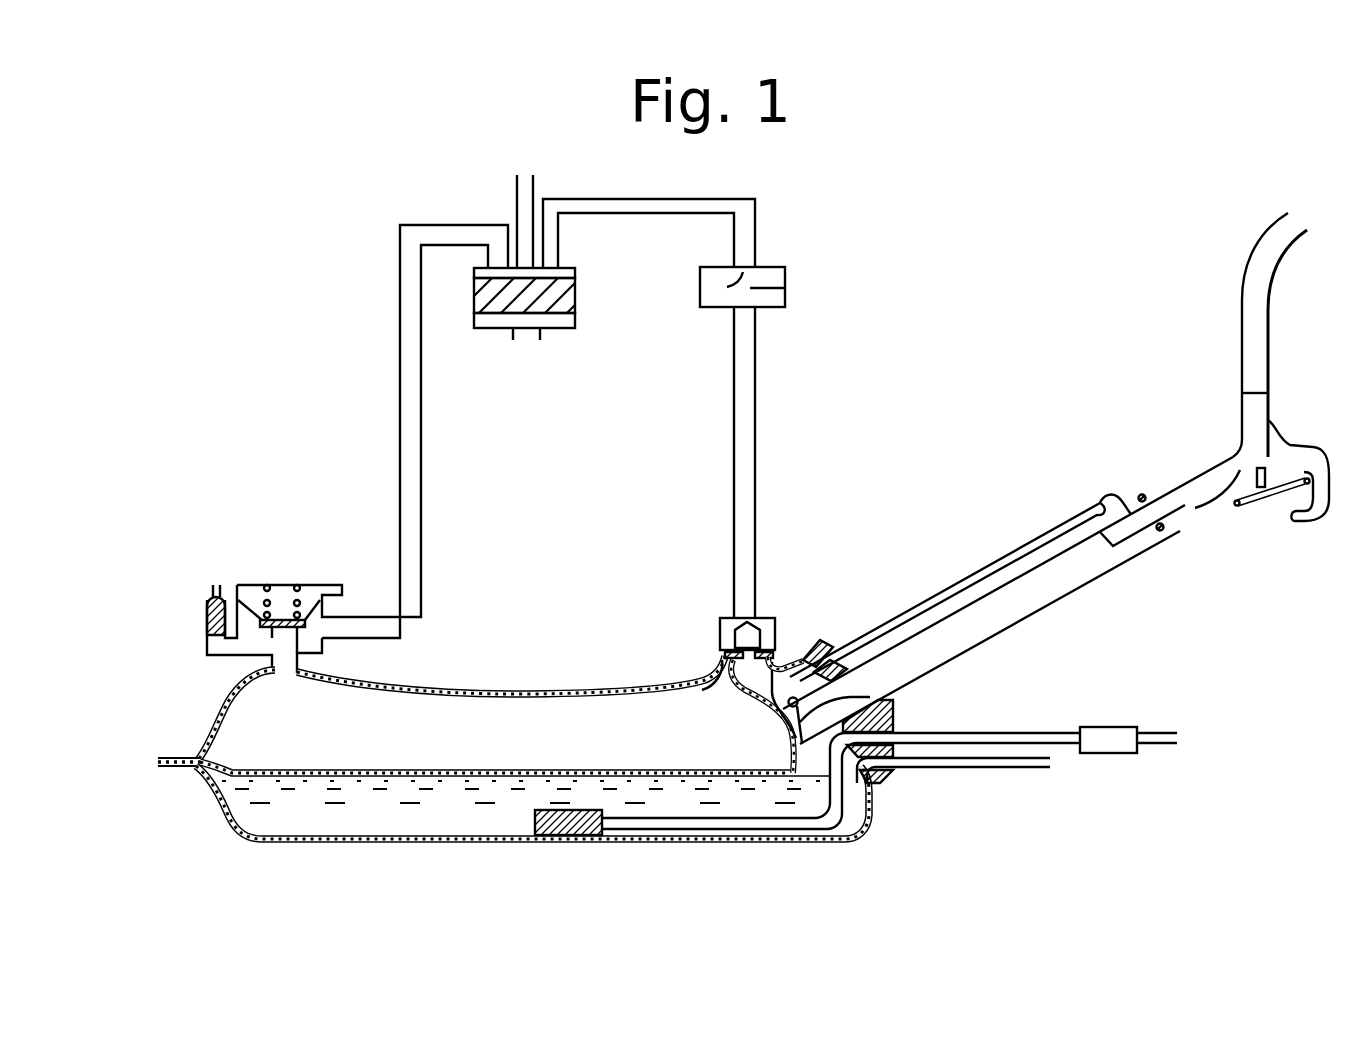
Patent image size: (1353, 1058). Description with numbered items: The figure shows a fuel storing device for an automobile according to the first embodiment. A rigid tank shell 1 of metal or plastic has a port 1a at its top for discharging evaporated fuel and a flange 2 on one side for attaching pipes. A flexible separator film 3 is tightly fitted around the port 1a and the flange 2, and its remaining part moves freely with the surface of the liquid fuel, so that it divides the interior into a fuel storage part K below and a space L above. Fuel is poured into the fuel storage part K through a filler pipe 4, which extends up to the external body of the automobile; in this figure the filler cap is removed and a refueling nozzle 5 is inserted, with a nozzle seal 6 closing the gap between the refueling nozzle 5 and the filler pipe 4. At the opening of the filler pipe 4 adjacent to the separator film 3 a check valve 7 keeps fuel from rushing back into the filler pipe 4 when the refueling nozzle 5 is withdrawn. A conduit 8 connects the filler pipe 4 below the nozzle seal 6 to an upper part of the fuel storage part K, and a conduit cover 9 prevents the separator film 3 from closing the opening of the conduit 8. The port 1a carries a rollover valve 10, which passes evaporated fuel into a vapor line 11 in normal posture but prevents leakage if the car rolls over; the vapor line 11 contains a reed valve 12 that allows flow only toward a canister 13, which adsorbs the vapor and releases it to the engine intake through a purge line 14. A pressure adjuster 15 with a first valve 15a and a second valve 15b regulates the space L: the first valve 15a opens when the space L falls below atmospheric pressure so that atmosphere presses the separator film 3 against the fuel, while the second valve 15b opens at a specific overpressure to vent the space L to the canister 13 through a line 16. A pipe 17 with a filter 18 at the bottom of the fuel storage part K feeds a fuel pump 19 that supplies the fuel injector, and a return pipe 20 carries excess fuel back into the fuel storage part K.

The tank shell 1 is at (462, 690).
The port 1a is at (720, 657).
The flange 2 is at (827, 645).
The separator film 3 is at (708, 690).
The filler pipe 4 is at (1067, 595).
The refueling nozzle 5 is at (1183, 502).
The nozzle seal 6 is at (1142, 494).
The check valve 7 is at (868, 697).
The conduit 8 is at (1027, 540).
The conduit cover 9 is at (780, 652).
The rollover valve 10 is at (722, 625).
The vapor line 11 is at (755, 425).
The reed valve 12 is at (772, 272).
The canister 13 is at (583, 300).
The purge line 14 is at (522, 186).
The pressure adjuster 15 is at (285, 579).
The first valve 15a is at (206, 598).
The second valve 15b is at (301, 597).
The line 16 is at (420, 428).
The pipe 17 is at (1168, 748).
The filter 18 is at (573, 836).
The fuel pump 19 is at (1108, 755).
The return pipe 20 is at (1026, 769).
The fuel storage part K is at (398, 825).
The space L is at (248, 718).